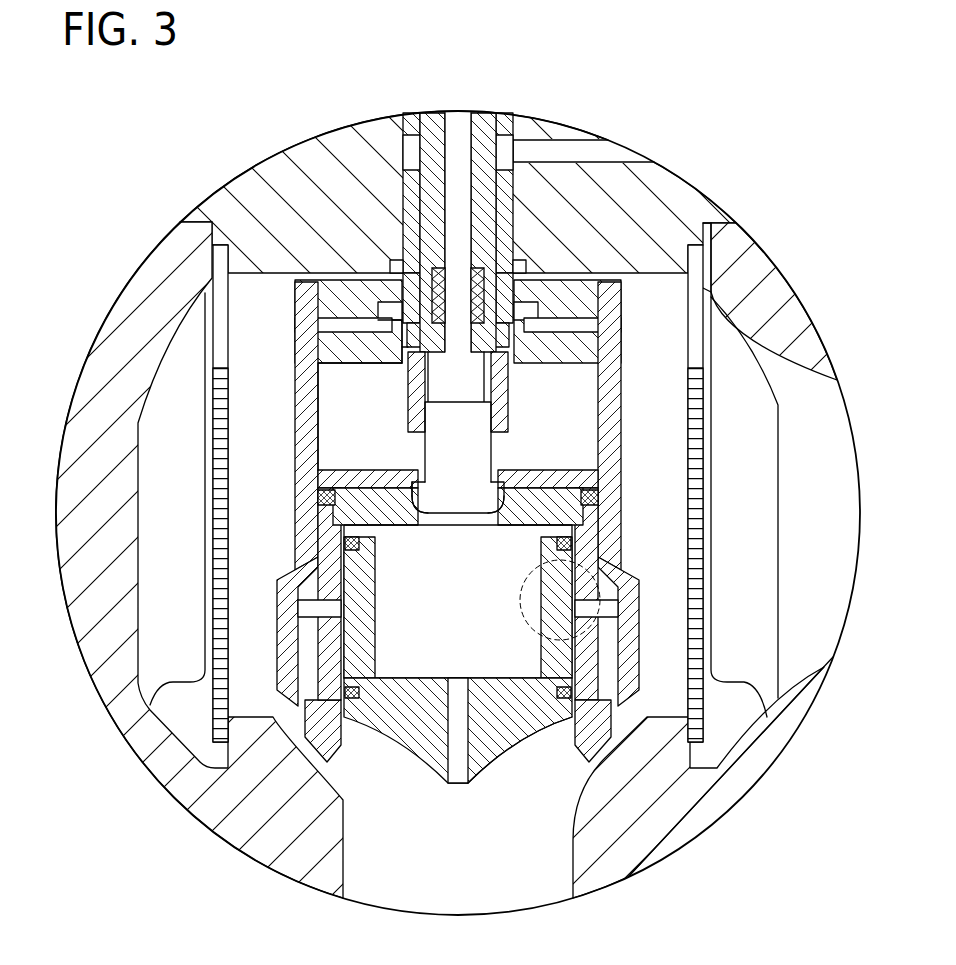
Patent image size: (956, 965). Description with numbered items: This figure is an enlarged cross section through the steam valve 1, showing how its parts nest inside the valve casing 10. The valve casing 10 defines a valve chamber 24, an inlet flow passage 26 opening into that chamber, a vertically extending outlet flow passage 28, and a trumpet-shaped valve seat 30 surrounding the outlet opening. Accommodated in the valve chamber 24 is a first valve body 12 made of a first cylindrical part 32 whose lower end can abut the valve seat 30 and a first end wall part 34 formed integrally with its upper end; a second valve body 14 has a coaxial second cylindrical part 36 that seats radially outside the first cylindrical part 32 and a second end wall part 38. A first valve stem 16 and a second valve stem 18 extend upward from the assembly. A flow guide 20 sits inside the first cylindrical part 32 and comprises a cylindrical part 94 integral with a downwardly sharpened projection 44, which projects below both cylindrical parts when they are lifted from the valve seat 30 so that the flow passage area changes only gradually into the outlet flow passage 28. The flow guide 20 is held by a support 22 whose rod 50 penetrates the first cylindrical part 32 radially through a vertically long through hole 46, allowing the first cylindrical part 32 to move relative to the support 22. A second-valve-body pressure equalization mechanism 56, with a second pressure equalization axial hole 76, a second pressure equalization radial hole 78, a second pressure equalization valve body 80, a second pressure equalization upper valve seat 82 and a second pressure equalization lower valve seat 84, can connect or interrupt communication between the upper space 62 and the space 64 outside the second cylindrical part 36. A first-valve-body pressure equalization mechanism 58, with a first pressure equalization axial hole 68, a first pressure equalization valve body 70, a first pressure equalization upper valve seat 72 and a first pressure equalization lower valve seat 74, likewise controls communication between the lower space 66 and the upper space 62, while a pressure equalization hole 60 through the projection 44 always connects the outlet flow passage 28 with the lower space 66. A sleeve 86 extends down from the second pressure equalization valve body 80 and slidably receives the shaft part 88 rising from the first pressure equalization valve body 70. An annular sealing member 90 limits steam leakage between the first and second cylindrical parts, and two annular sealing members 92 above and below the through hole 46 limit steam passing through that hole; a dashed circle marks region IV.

The steam valve 1 is at (706, 99).
The valve casing 10 is at (658, 177).
The first valve body 12 is at (608, 702).
The second valve body 14 is at (650, 646).
The first valve stem 16 is at (458, 122).
The second valve stem 18 is at (485, 122).
The flow guide 20 is at (501, 765).
The support 22 is at (627, 600).
The valve chamber 24 is at (671, 429).
The inlet flow passage 26 is at (824, 522).
The outlet flow passage 28 is at (473, 886).
The valve seat 30 is at (318, 750).
The first cylindrical part 32 is at (587, 663).
The first end wall part 34 is at (533, 473).
The second cylindrical part 36 is at (622, 478).
The second end wall part 38 is at (350, 366).
The projection 44 is at (420, 747).
The through hole 46 is at (328, 643).
The rod 50 is at (325, 610).
The second-valve-body pressure equalization mechanism 56 is at (394, 383).
The first-valve-body pressure equalization mechanism 58 is at (521, 452).
The pressure equalization hole 60 is at (458, 776).
The upper space 62 is at (593, 424).
The space 64 is at (671, 374).
The lower space 66 is at (494, 612).
The first pressure equalization axial hole 68 is at (428, 508).
The first pressure equalization valve body 70 is at (458, 500).
The first pressure equalization upper valve seat 72 is at (423, 488).
The first pressure equalization lower valve seat 74 is at (492, 512).
The second pressure equalization axial hole 76 is at (360, 306).
The second pressure equalization radial hole 78 is at (330, 323).
The second pressure equalization valve body 80 is at (350, 340).
The second pressure equalization upper valve seat 82 is at (557, 304).
The second pressure equalization lower valve seat 84 is at (547, 324).
The sleeve 86 is at (408, 408).
The shaft part 88 is at (432, 442).
The annular sealing member 90 is at (318, 498).
The annular sealing members 92 is at (345, 544).
The cylindrical part 94 is at (343, 627).
The section IV is at (623, 557).